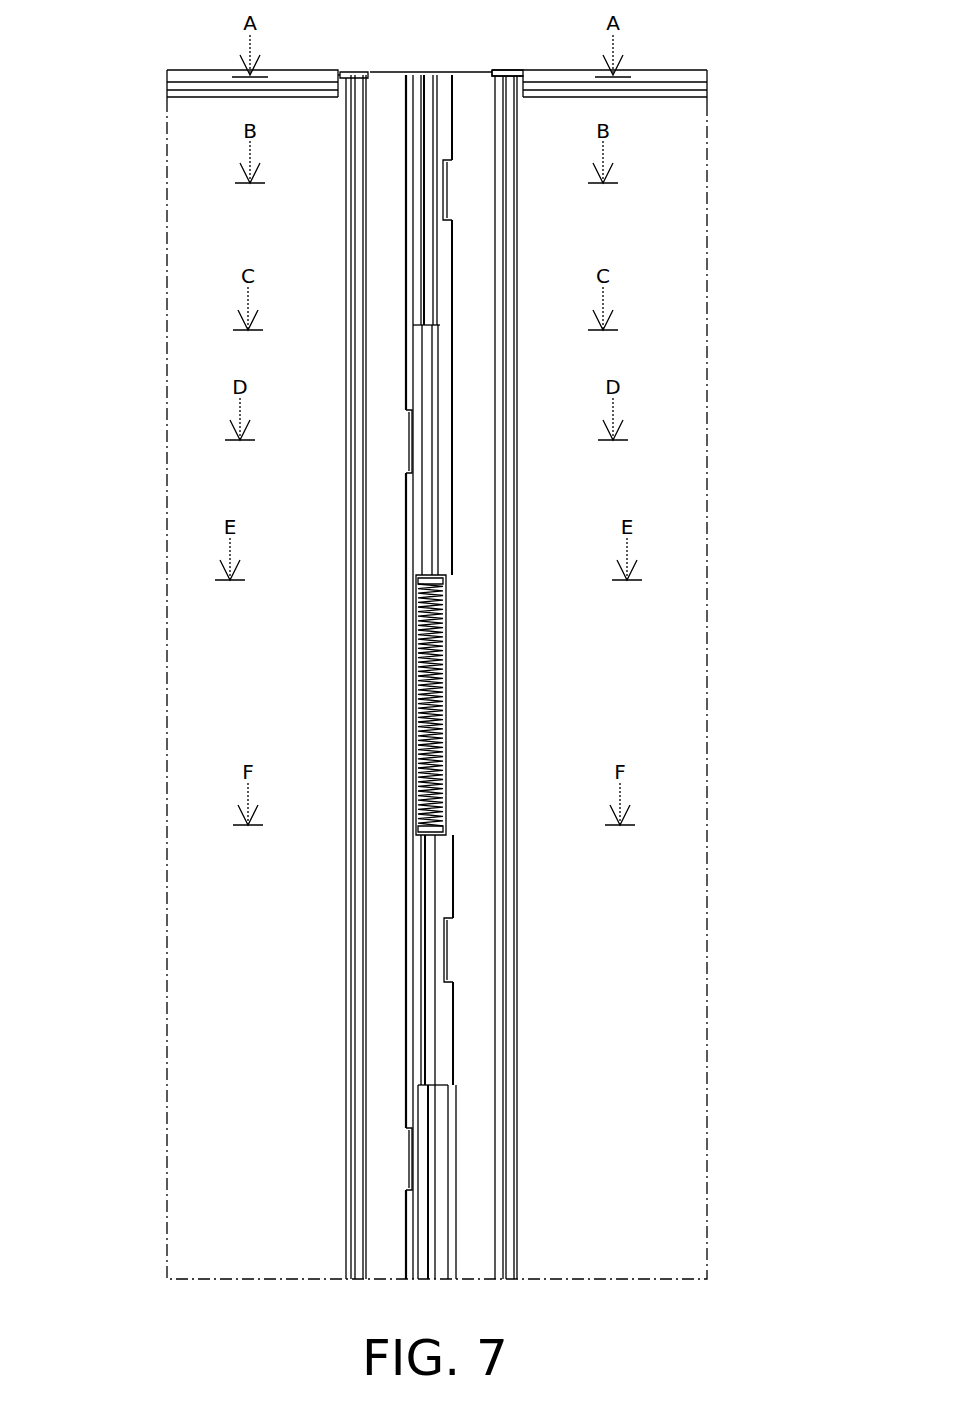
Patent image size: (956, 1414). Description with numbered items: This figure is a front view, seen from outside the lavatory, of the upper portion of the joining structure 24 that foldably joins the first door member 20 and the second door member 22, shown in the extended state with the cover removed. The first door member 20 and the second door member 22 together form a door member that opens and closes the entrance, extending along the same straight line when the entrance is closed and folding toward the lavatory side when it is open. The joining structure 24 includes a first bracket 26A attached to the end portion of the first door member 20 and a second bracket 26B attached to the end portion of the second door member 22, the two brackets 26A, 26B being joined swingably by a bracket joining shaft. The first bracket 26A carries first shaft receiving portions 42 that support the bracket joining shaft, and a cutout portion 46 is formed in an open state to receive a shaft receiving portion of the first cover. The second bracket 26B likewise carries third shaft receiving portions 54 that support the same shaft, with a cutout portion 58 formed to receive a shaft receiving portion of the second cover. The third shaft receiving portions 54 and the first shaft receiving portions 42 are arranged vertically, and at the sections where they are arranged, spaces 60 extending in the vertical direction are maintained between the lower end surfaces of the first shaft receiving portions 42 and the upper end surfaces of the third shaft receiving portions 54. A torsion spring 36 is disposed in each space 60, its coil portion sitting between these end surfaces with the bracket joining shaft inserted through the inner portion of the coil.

The first door member 20 is at (230, 214).
The second door member 22 is at (667, 243).
The joining structure 24 is at (430, 62).
The first bracket 26A is at (387, 87).
The second bracket 26B is at (483, 88).
The first shaft receiving portion 42 is at (413, 522).
The cutout portion 46 is at (413, 445).
The third shaft receiving portion 54 is at (447, 252).
The cutout portion 58 is at (447, 190).
The space 60 is at (418, 647).
The torsion spring 36 is at (440, 636).